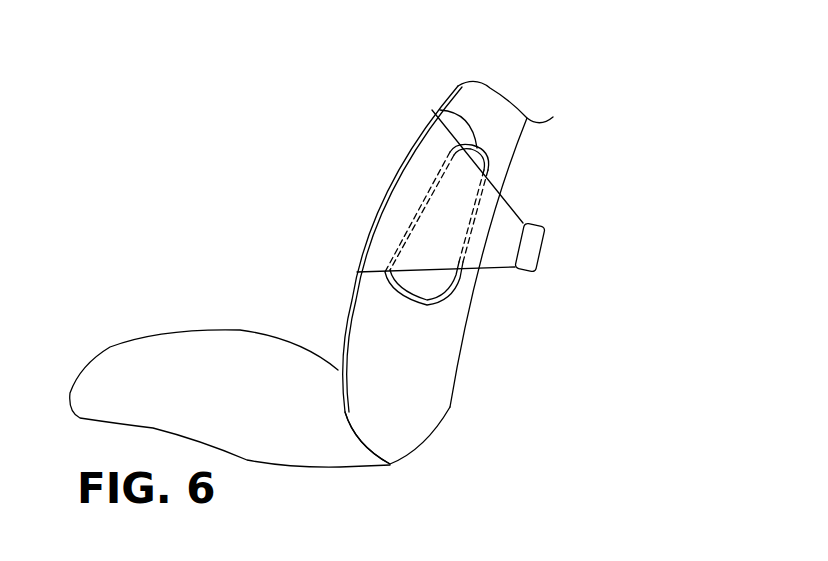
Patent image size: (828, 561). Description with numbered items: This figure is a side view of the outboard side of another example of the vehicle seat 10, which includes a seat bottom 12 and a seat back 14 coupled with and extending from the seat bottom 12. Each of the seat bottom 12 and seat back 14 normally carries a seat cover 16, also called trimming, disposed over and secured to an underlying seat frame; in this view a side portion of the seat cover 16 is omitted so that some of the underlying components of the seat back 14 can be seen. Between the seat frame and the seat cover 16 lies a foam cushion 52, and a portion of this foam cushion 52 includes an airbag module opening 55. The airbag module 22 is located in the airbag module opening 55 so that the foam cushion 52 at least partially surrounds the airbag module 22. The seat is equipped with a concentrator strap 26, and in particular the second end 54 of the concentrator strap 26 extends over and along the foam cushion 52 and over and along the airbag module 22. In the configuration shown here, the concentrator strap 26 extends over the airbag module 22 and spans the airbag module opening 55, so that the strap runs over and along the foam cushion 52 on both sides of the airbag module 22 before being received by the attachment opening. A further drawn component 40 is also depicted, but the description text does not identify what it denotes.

The vehicle seat 10 is at (217, 149).
The seat bottom 12 is at (128, 334).
The seat back 14 is at (490, 100).
The seat cover 16 is at (340, 343).
The airbag module 22 is at (413, 282).
The concentrator strap 26 is at (495, 268).
The actuator 40 is at (545, 250).
The foam cushion 52 is at (503, 127).
The second end of the concentrator strap 54 is at (397, 185).
The airbag module opening 55 is at (452, 92).